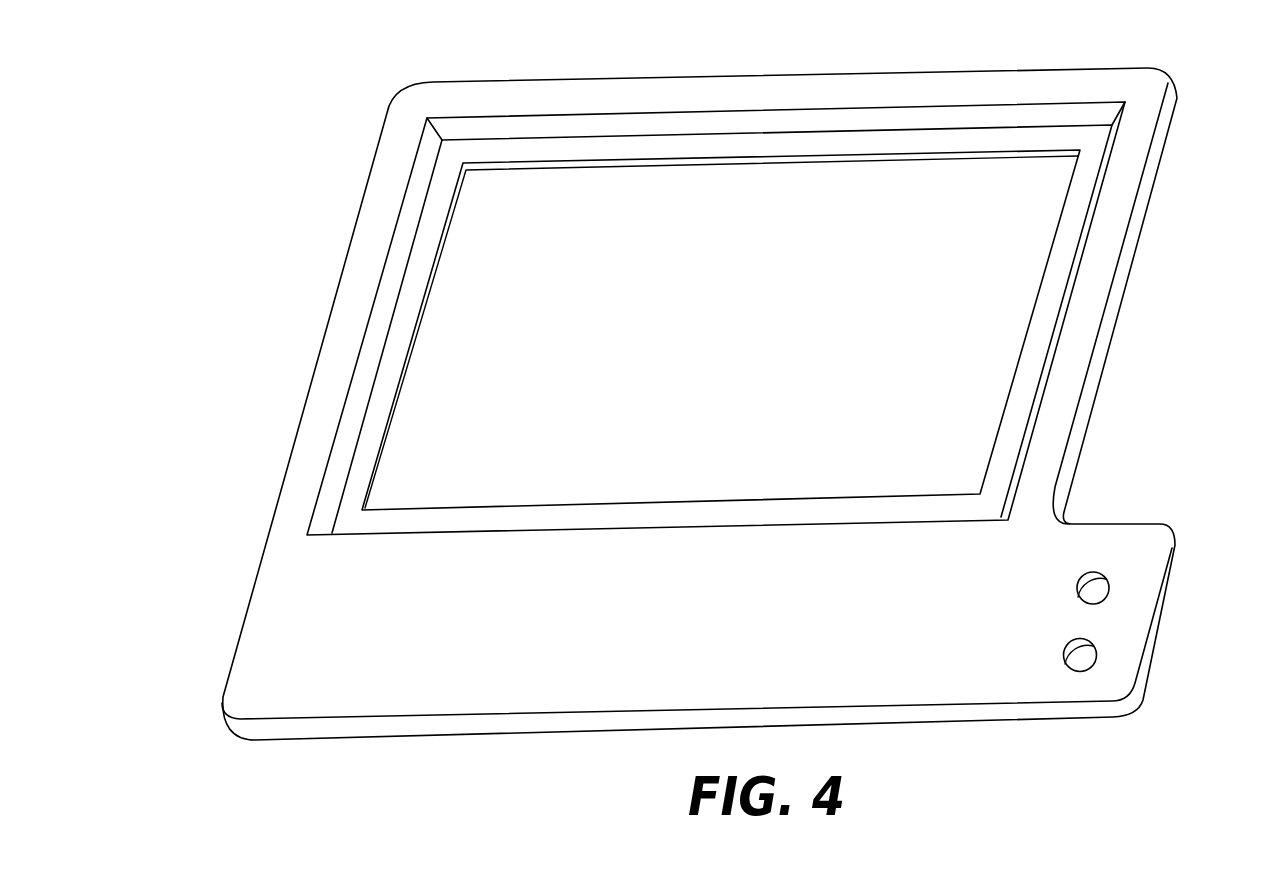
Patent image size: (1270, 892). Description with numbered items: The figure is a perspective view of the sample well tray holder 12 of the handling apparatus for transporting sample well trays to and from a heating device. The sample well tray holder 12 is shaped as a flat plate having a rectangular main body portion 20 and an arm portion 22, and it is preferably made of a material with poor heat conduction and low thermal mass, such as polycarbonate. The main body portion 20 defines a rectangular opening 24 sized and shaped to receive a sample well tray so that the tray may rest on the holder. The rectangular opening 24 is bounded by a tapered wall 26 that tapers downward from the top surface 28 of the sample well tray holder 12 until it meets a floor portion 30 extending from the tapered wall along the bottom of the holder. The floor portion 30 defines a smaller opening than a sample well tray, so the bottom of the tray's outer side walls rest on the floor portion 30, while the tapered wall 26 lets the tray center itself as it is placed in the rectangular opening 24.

The sample well tray holder 12 is at (703, 69).
The main body portion 20 is at (568, 670).
The arm portion 22 is at (1112, 632).
The rectangular opening 24 is at (513, 237).
The tapered wall 26 is at (397, 262).
The top surface 28 is at (930, 90).
The floor portion 30 is at (390, 373).